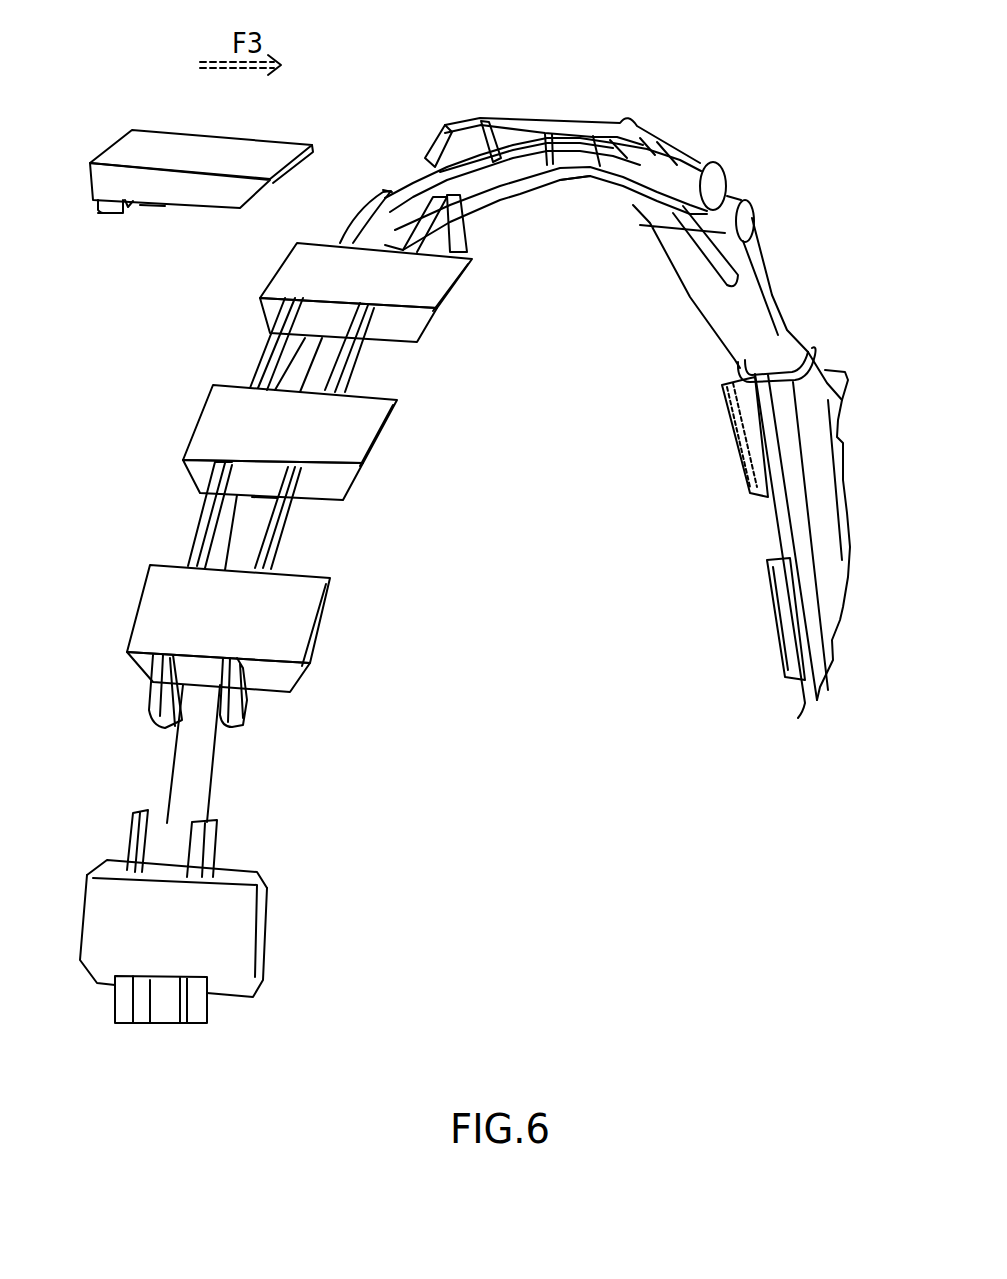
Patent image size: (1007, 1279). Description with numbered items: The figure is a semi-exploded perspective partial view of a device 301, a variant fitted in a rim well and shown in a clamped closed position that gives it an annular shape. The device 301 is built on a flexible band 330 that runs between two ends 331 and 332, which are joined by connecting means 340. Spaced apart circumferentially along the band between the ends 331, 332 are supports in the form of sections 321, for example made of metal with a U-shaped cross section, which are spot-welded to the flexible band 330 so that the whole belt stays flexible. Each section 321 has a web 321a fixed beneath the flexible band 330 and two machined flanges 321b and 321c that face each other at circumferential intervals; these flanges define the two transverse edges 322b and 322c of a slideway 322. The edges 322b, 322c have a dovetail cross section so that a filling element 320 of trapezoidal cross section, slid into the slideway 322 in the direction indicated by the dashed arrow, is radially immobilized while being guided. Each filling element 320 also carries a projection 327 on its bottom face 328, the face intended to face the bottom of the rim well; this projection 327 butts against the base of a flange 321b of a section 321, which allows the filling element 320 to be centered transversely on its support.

The device 301 is at (698, 98).
The filling element 320 is at (177, 121).
The section 321 is at (519, 212).
The web 321a is at (177, 732).
The flange 321b is at (147, 700).
The flange 321c is at (250, 697).
The slideway 322 is at (412, 155).
The transverse edge 322b is at (390, 200).
The transverse edge 322c is at (483, 203).
The projection 327 is at (115, 210).
The bottom face 328 is at (167, 205).
The flexible band 330 is at (622, 197).
The end 331 is at (582, 207).
The end 332 is at (799, 220).
The connecting means 340 is at (748, 152).